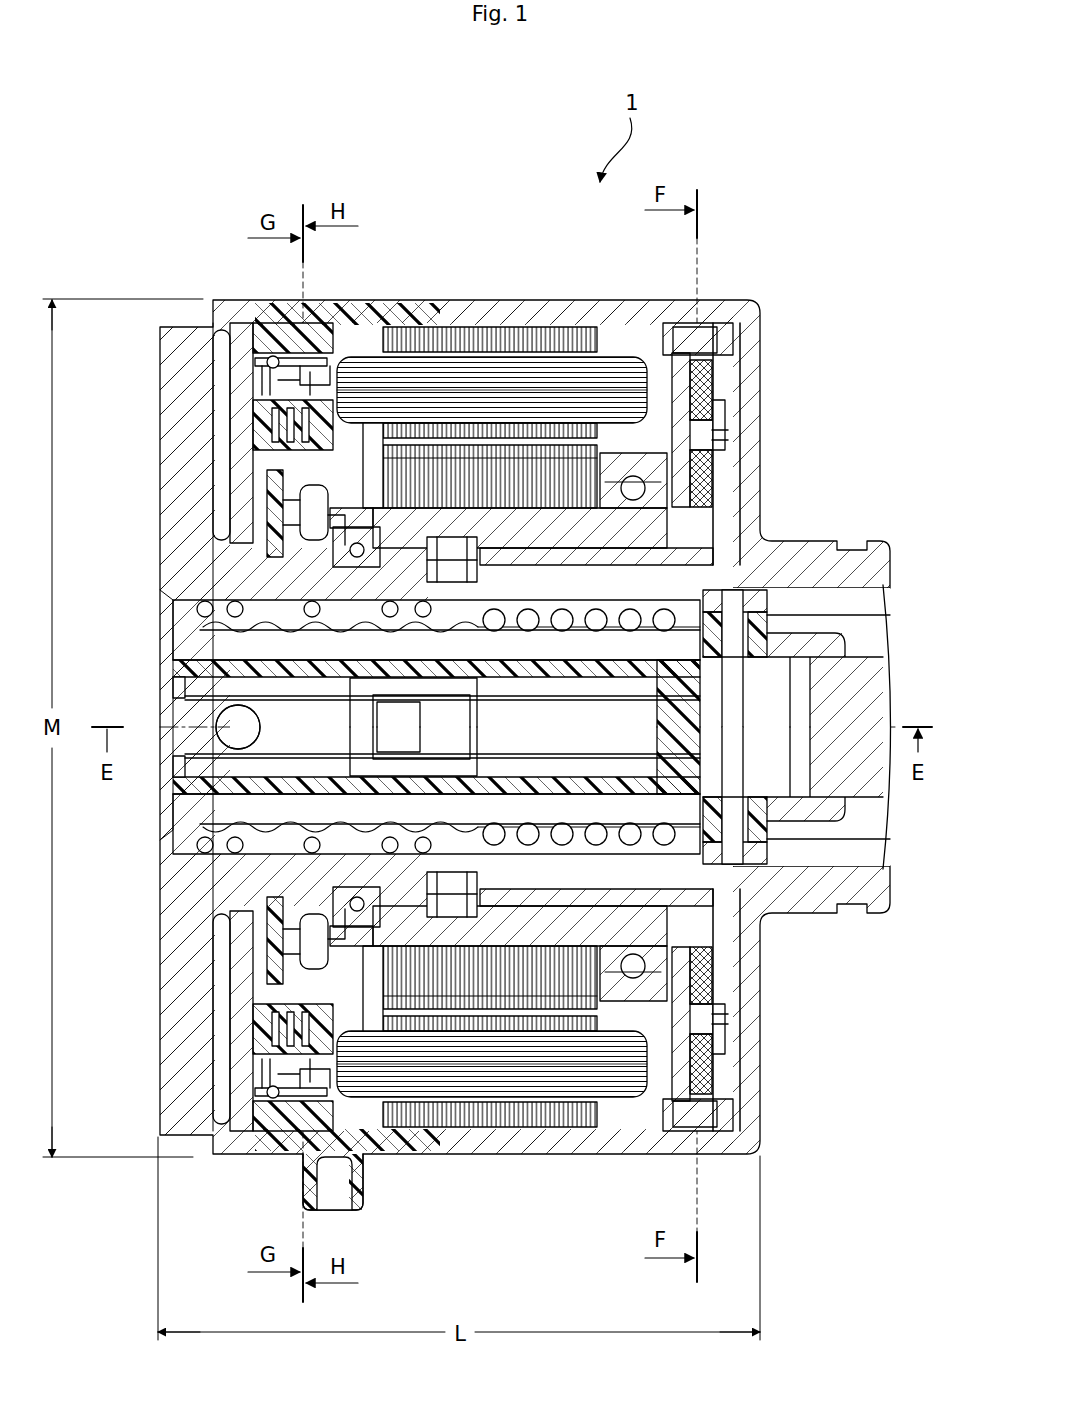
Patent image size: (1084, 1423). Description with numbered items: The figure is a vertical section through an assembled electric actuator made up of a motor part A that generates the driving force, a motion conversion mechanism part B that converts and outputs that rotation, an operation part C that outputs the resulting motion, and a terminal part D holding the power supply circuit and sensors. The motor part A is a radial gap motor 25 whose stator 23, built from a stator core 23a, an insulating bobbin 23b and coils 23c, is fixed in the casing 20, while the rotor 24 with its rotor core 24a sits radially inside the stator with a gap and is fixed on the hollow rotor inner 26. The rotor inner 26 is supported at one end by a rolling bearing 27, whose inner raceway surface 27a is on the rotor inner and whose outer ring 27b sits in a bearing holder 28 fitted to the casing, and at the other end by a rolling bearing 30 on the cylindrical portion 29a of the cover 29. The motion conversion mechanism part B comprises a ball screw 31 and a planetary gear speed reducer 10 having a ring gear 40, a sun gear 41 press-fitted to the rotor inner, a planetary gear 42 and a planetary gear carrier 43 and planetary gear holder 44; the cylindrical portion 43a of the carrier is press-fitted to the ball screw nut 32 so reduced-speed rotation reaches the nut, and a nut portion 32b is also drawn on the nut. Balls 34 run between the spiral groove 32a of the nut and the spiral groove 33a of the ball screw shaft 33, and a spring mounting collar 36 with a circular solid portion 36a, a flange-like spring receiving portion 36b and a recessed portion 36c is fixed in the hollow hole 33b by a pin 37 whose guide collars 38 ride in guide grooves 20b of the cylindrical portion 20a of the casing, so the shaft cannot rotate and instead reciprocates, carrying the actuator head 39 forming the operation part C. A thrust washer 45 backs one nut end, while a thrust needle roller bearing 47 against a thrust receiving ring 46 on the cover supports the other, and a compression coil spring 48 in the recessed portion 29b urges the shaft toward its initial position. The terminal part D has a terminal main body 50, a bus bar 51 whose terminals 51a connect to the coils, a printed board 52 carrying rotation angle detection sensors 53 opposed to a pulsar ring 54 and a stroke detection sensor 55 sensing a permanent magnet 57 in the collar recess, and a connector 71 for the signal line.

The planetary gear speed reducer 10 is at (727, 437).
The casing 20 is at (736, 296).
The cylindrical portion 20a is at (800, 538).
The guide grooves 20b is at (847, 592).
The stator 23 is at (535, 338).
The stator core 23a is at (562, 348).
The bobbin 23b is at (592, 352).
The coils 23c is at (362, 352).
The rotor 24 is at (573, 522).
The rotor core 24a is at (468, 475).
The radial gap motor 25 is at (473, 330).
The rotor inner 26 is at (715, 340).
The rolling bearing 27 is at (640, 905).
The inner raceway surface 27a is at (632, 1010).
The outer ring 27b is at (595, 900).
The bearing holder 28 is at (640, 1122).
The cover 29 is at (157, 335).
The cylindrical portion 29a is at (258, 545).
The recessed portion 29b is at (290, 580).
The rolling bearing 30 is at (355, 915).
The ball screw 31 is at (450, 875).
The ball screw nut 32 is at (432, 890).
The spiral groove 32a is at (560, 880).
The bearing ball 32b is at (521, 872).
The ball screw shaft 33 is at (700, 905).
The spiral groove 33a is at (500, 870).
The hollow hole 33b is at (300, 656).
The balls 34 is at (683, 905).
The spring mounting collar 36 is at (262, 866).
The circular solid portion 36a is at (760, 690).
The spring receiving portion 36b is at (265, 803).
The recessed portion 36c is at (575, 690).
The pin 37 is at (770, 815).
The guide collars 38 is at (770, 842).
The actuator head 39 is at (885, 670).
The ring gear 40 is at (713, 342).
The sun gear 41 is at (690, 520).
The planetary gear 42 is at (705, 470).
The planetary gear carrier 43 is at (717, 420).
The cylindrical portion 43a is at (720, 1005).
The planetary gear holder 44 is at (692, 408).
The thrust washer 45 is at (735, 870).
The thrust receiving ring 46 is at (430, 890).
The thrust needle roller bearing 47 is at (278, 1010).
The compression coil spring 48 is at (236, 606).
The terminal main body 50 is at (283, 333).
The bus bar 51 is at (248, 418).
The terminals 51a is at (257, 410).
The printed board 52 is at (270, 515).
The rotation angle detection sensors 53 is at (320, 920).
The pulsar ring 54 is at (300, 930).
The stroke detection sensor 55 is at (385, 748).
The permanent magnet 57 is at (237, 727).
The connector 71 is at (335, 1188).
The motor part A is at (508, 330).
The motion conversion mechanism part B is at (650, 582).
The operation part C is at (848, 630).
The terminal part D is at (405, 298).